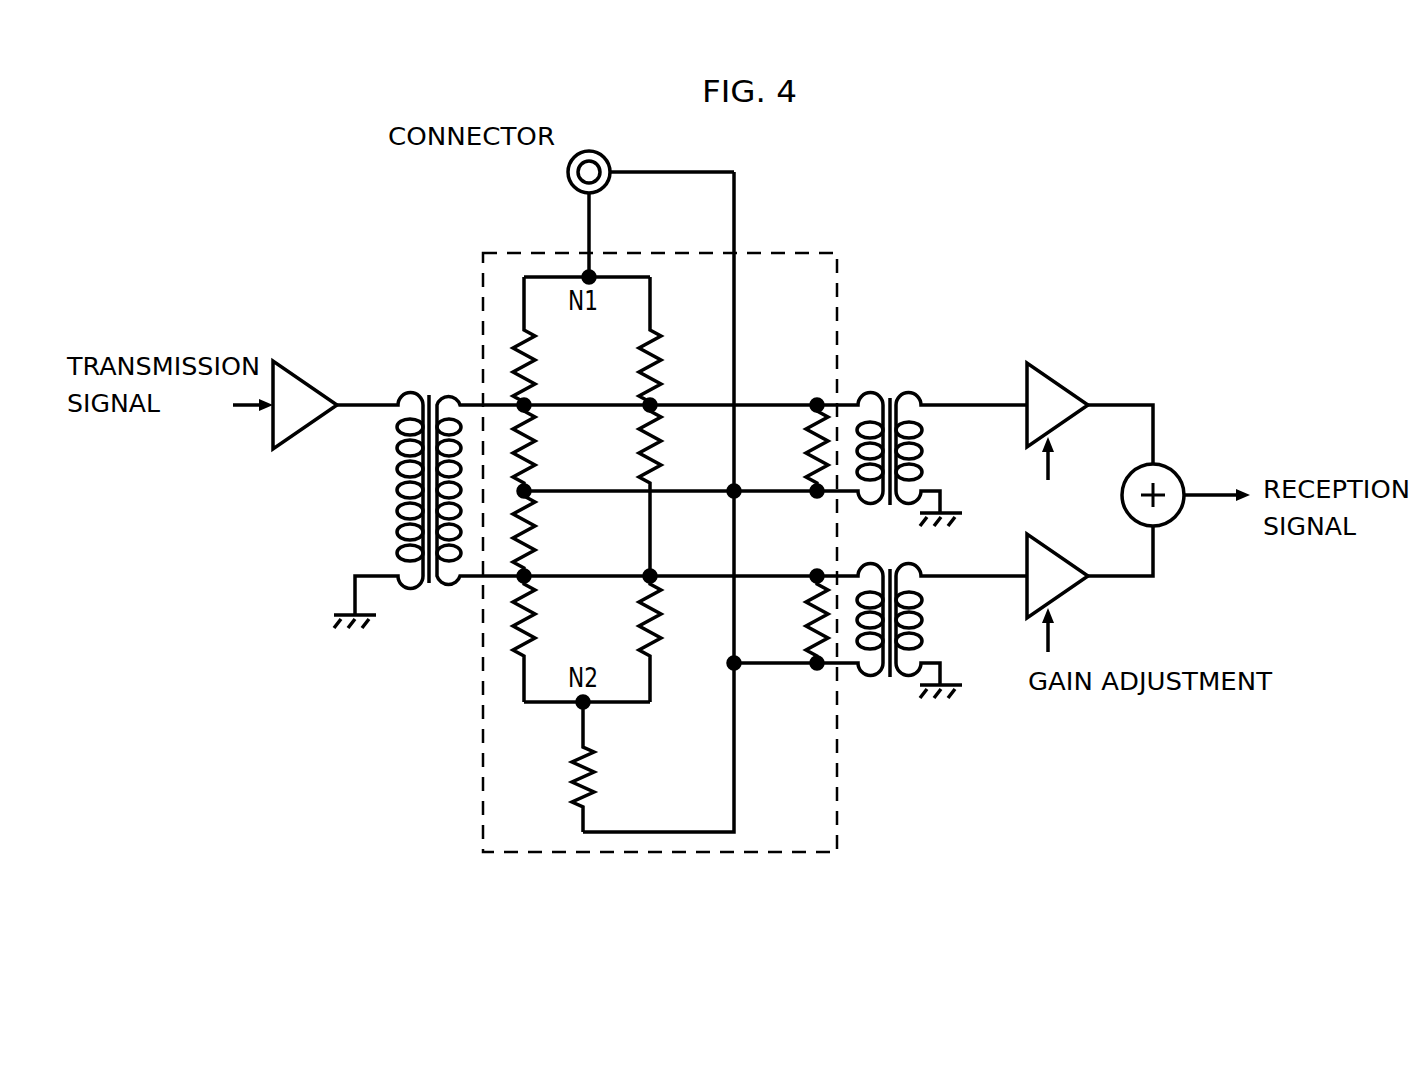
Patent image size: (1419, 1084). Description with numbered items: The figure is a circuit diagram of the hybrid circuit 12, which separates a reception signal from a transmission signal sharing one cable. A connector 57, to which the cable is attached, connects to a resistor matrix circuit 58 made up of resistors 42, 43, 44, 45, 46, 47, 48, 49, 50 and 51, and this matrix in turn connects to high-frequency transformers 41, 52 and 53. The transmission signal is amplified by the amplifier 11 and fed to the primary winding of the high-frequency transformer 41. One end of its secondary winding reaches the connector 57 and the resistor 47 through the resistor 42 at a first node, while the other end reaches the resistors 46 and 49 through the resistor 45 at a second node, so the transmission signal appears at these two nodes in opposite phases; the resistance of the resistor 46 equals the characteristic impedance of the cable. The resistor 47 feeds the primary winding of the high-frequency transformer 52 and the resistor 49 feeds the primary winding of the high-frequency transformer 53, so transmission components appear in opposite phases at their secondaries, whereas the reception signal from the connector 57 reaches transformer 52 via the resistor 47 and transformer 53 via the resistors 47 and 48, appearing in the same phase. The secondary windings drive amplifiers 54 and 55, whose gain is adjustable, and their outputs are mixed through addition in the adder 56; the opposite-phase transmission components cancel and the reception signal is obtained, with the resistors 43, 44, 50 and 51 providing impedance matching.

The amplifier 11 is at (305, 398).
The hybrid circuit 12 is at (660, 534).
The high-frequency transformer 41 is at (429, 510).
The resistor 42 is at (545, 341).
The resistor 43 is at (545, 448).
The resistor 44 is at (545, 533).
The resistor 45 is at (545, 639).
The resistor 46 is at (603, 767).
The resistor 47 is at (669, 341).
The resistor 48 is at (669, 490).
The resistor 49 is at (669, 639).
The resistor 50 is at (799, 448).
The resistor 51 is at (799, 619).
The high-frequency transformer 52 is at (922, 442).
The high-frequency transformer 53 is at (922, 641).
The amplifier 54 is at (1057, 404).
The amplifier 55 is at (1057, 577).
The adder 56 is at (1169, 490).
The connector 57 is at (629, 214).
The resistor matrix circuit 58 is at (660, 535).